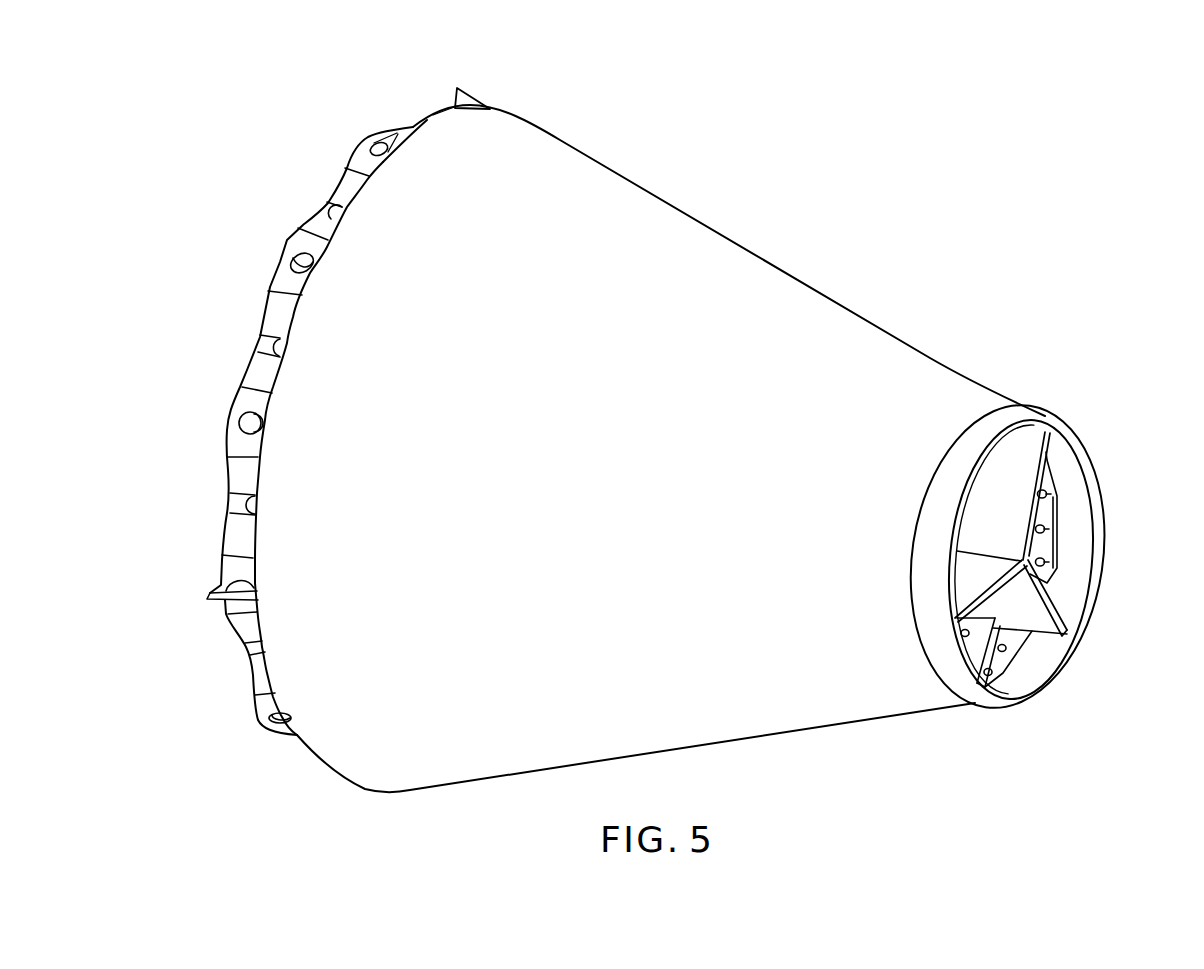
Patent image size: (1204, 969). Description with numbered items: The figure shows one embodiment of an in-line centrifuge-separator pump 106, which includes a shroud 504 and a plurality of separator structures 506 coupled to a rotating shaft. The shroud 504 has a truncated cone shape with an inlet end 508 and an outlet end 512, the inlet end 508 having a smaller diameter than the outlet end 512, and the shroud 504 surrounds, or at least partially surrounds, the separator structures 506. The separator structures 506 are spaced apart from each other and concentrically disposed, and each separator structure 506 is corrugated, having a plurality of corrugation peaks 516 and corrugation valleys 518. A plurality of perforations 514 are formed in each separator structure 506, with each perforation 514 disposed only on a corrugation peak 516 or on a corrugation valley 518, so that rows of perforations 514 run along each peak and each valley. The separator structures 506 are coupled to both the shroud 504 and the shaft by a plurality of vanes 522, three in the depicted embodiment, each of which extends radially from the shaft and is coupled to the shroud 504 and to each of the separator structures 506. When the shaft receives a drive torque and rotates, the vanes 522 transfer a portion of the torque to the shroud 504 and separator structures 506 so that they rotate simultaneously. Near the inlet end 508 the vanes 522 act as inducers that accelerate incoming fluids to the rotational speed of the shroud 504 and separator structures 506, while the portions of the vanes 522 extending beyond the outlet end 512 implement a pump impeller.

The in-line centrifuge-separator pump 106 is at (921, 181).
The shroud 504 is at (760, 257).
The separator structure 506 is at (278, 258).
The inlet end 508 is at (1092, 466).
The outlet end 512 is at (413, 127).
The perforation 514 is at (380, 143).
The corrugation peak 516 is at (228, 425).
The corrugation valley 518 is at (260, 342).
The vane 522 is at (1047, 446).